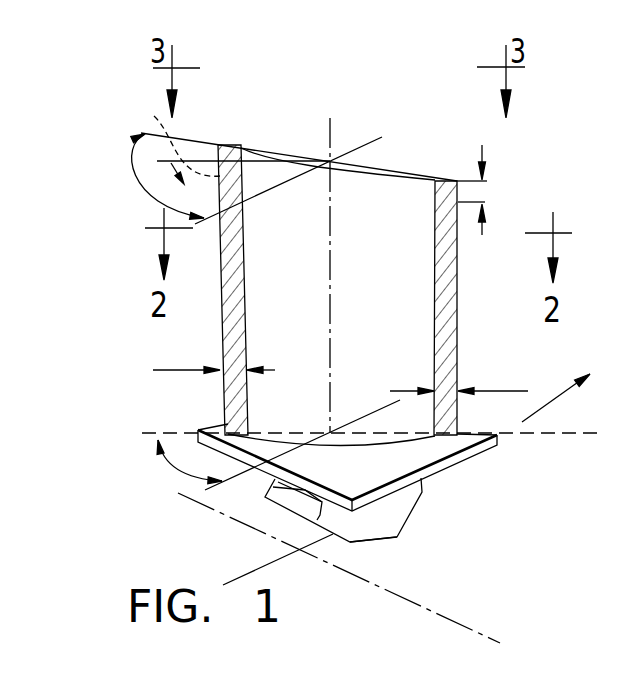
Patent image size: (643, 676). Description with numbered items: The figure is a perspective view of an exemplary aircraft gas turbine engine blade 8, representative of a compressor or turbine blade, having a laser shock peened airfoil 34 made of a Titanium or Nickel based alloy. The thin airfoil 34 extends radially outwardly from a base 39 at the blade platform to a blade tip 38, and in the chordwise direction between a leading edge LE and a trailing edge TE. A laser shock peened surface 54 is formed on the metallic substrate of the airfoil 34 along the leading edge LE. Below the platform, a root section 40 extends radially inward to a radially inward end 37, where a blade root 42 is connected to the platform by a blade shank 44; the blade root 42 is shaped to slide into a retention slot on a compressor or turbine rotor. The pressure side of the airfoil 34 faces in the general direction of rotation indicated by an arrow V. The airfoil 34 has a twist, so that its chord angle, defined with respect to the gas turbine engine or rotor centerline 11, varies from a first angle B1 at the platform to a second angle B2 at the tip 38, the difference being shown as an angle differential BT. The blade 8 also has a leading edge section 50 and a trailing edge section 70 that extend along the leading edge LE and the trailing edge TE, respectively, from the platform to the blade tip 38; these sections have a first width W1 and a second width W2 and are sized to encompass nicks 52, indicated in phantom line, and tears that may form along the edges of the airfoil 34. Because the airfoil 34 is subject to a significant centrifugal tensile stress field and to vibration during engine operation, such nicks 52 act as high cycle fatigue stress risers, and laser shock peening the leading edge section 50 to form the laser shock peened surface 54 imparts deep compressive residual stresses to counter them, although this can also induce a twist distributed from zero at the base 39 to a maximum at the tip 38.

The gas turbine engine blade 8 is at (348, 329).
The rotor centerline 11 is at (403, 598).
The airfoil 34 is at (351, 283).
The radially inward end 37 is at (476, 423).
The blade tip 38 is at (380, 167).
The base 39 is at (393, 446).
The root section 40 is at (432, 512).
The blade root 42 is at (360, 535).
The blade shank 44 is at (296, 489).
The leading edge section 50 is at (230, 403).
The nicks 52 is at (155, 118).
The laser shock peened surface 54 is at (233, 213).
The trailing edge section 70 is at (458, 277).
The angle differential BT is at (186, 129).
The second angle B2 is at (157, 193).
The first angle B1 is at (182, 470).
The leading edge LE is at (219, 258).
The trailing edge TE is at (458, 215).
The first width W1 is at (484, 150).
The second width W2 is at (492, 390).
The arrow indicating direction of rotation V is at (550, 400).